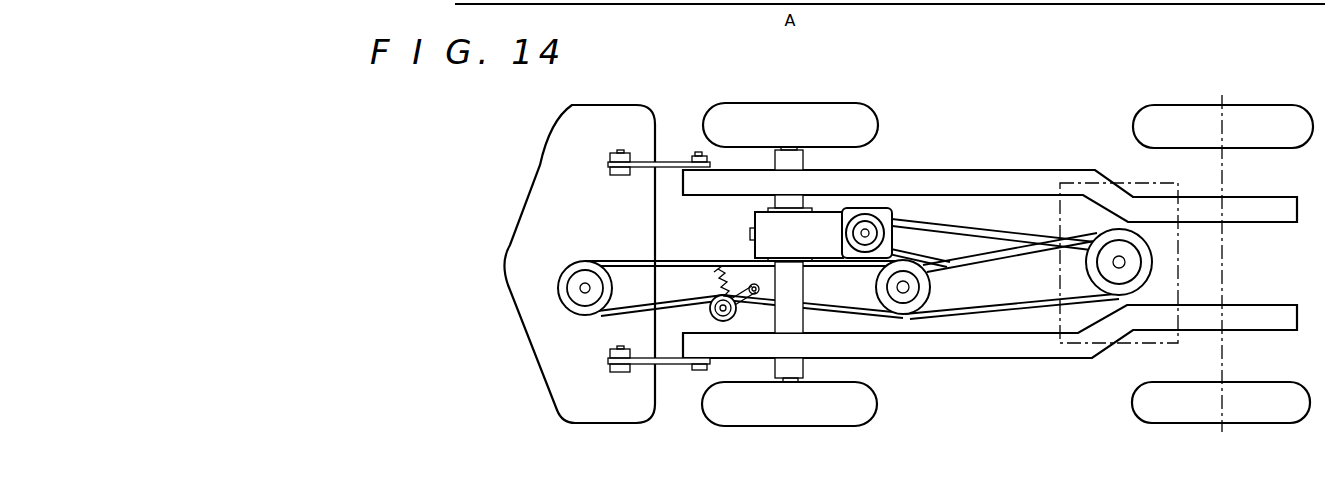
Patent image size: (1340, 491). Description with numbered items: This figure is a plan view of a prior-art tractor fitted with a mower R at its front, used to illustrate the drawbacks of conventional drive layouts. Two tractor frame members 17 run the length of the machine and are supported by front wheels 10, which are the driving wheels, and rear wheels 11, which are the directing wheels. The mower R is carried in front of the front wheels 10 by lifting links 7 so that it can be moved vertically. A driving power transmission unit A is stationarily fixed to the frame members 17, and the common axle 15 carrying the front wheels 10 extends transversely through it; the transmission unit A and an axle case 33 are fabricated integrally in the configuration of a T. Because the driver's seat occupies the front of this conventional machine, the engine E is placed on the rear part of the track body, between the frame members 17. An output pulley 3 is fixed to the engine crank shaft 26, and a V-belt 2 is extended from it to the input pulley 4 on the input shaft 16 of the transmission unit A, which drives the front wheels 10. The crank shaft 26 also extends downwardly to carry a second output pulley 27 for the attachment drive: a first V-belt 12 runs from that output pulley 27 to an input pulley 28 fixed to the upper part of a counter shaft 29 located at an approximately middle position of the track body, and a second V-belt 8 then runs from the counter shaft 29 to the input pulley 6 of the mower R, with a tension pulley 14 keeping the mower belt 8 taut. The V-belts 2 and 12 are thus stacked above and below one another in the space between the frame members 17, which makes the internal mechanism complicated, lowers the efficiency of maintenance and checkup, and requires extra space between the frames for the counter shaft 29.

The mower R is at (508, 222).
The driving power transmission unit A is at (752, 233).
The engine E is at (1062, 213).
The V-belt 2 is at (985, 231).
The output pulley 3 is at (1141, 246).
The input pulley 4 is at (880, 212).
The input pulley of the mechanical attachment 6 is at (585, 315).
The lifting links 7 is at (674, 160).
The second V-belt 8 is at (628, 260).
The front wheels 10 is at (851, 107).
The rear wheels 11 is at (1166, 110).
The first V-belt 12 is at (1025, 298).
The tension pulley 14 is at (712, 309).
The axle 15 is at (790, 384).
The input shaft 16 is at (870, 233).
The tractor frame members 17 is at (978, 172).
The crank shaft 26 is at (1122, 265).
The output pulley 27 is at (1153, 263).
The input pulley 28 is at (879, 287).
The counter shaft 29 is at (910, 287).
The axle case 33 is at (776, 322).